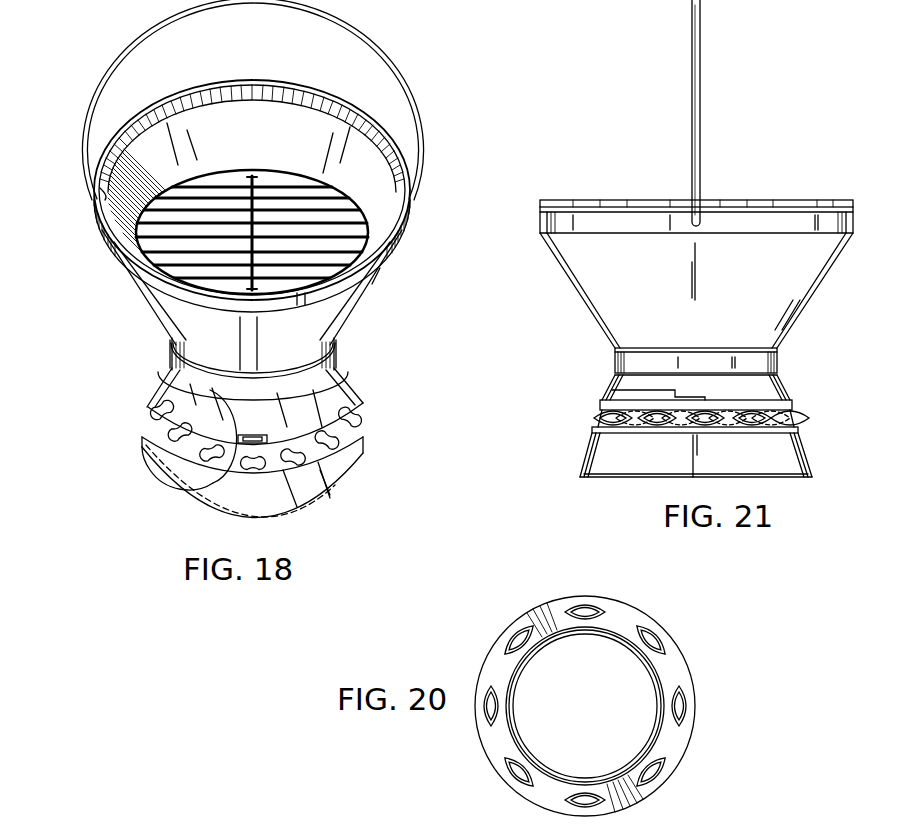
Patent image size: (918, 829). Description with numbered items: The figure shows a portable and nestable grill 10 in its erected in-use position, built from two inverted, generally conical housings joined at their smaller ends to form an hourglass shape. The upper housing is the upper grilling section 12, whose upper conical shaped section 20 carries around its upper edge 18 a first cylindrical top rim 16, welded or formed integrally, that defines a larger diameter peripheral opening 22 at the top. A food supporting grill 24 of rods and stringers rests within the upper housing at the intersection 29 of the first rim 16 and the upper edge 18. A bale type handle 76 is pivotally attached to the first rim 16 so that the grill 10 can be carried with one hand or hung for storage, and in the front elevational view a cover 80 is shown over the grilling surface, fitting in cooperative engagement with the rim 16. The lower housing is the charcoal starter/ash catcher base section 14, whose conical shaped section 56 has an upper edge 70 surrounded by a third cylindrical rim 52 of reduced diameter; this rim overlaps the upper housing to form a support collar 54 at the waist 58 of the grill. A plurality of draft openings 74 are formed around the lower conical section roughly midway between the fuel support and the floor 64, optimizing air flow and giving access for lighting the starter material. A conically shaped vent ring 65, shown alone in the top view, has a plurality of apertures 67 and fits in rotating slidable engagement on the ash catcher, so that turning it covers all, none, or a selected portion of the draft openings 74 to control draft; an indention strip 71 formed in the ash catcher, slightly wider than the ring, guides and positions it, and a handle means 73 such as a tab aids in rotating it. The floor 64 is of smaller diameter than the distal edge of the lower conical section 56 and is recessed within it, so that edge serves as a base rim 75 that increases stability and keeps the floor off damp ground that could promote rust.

In FIG. 18, the portable and nestable grill 10 is at (423, 118).
In FIG. 18, the upper grilling section 12 is at (352, 318).
In FIG. 21, the upper grilling section 12 is at (810, 302).
In FIG. 18, the charcoal starter/ash catcher base section 14 is at (367, 433).
In FIG. 21, the charcoal starter/ash catcher base section 14 is at (787, 385).
In FIG. 18, the first cylindrical top rim 16 is at (388, 257).
In FIG. 21, the first cylindrical top rim 16 is at (572, 220).
In FIG. 18, the upper edge of the upper conical shaped section 18 is at (365, 282).
In FIG. 18, the upper conical shaped section 20 is at (147, 300).
In FIG. 18, the peripheral opening 22 is at (232, 178).
In FIG. 18, the food supporting grill 24 is at (278, 193).
In FIG. 18, the intersection of the first rim and the upper edge 29 is at (118, 265).
In FIG. 18, the third cylindrical rim 52 is at (330, 352).
In FIG. 18, the support collar 54 is at (168, 350).
In FIG. 18, the conical shaped section of the lower housing 56 is at (157, 430).
In FIG. 18, the waist 58 is at (170, 487).
In FIG. 21, the waist 58 is at (777, 362).
In FIG. 18, the floor 64 is at (203, 510).
In FIG. 18, the vent ring 65 is at (157, 407).
In FIG. 21, the vent ring 65 is at (773, 475).
In FIG. 20, the vent ring 65 is at (620, 617).
In FIG. 18, the apertures of the vent ring 67 is at (243, 470).
In FIG. 21, the apertures of the vent ring 67 is at (687, 432).
In FIG. 20, the apertures of the vent ring 67 is at (677, 673).
In FIG. 18, the upper edge of the conical shaped section 70 is at (310, 395).
In FIG. 21, the indention strip 71 is at (792, 405).
In FIG. 18, the handle means 73 is at (237, 435).
In FIG. 21, the handle means 73 is at (612, 388).
In FIG. 18, the draft openings 74 is at (310, 462).
In FIG. 21, the draft openings 74 is at (600, 423).
In FIG. 18, the base rim 75 is at (317, 510).
In FIG. 18, the bale type handle 76 is at (383, 60).
In FIG. 21, the bale type handle 76 is at (700, 57).
In FIG. 21, the dome shaped cover 80 is at (772, 200).